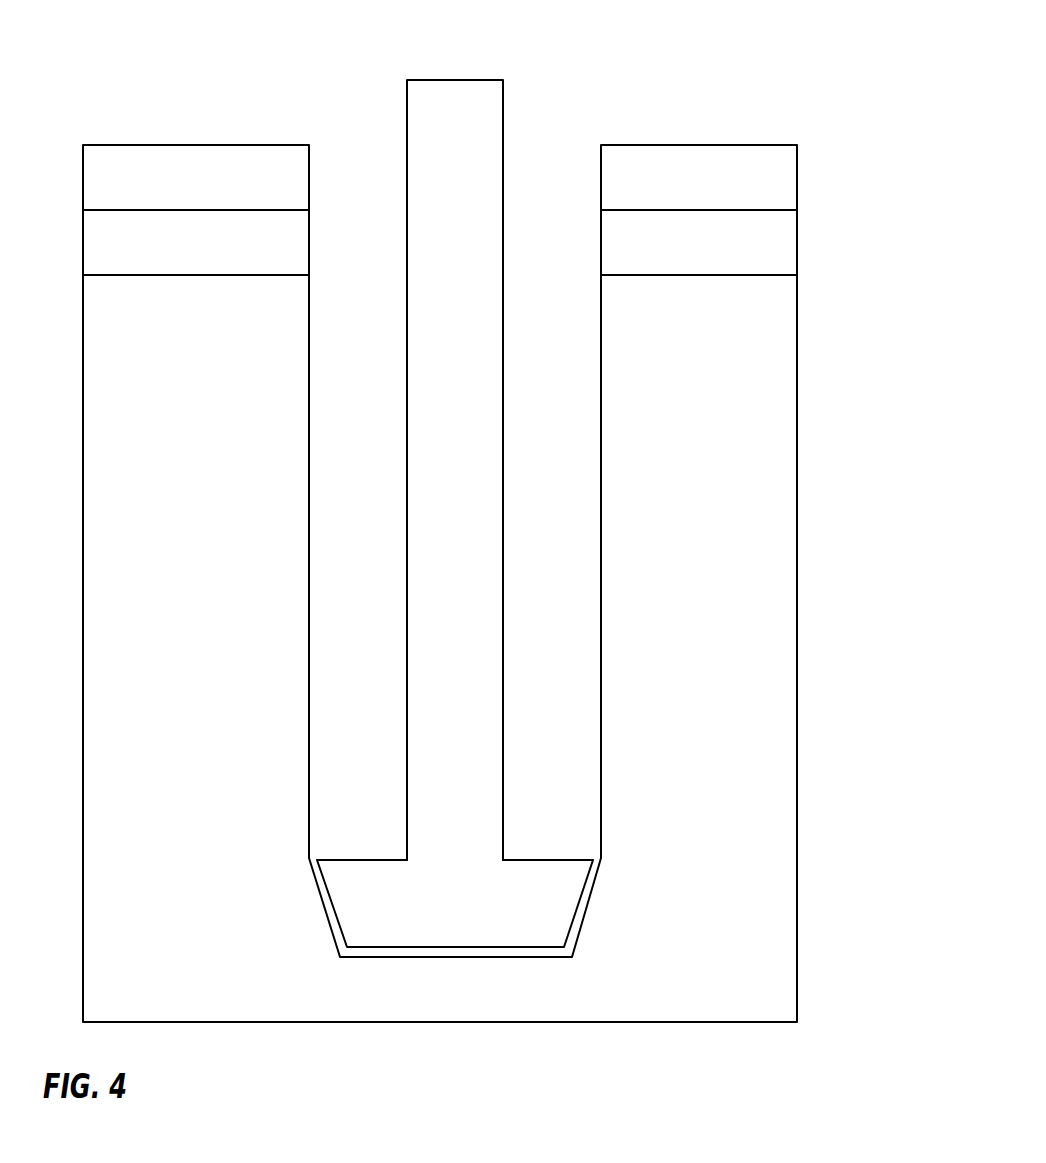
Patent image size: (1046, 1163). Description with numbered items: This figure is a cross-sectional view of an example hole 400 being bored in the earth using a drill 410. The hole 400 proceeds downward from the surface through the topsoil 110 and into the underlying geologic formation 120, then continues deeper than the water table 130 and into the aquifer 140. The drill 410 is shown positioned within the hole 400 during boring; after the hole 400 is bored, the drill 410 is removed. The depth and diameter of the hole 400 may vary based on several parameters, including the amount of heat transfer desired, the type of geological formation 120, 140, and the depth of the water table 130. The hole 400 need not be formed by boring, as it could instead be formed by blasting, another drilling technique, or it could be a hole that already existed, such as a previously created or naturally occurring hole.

The topsoil 110 is at (762, 179).
The geologic formation 120 is at (762, 247).
The water table 130 is at (796, 272).
The aquifer 140 is at (762, 377).
The hole 400 is at (562, 227).
The drill 410 is at (453, 80).